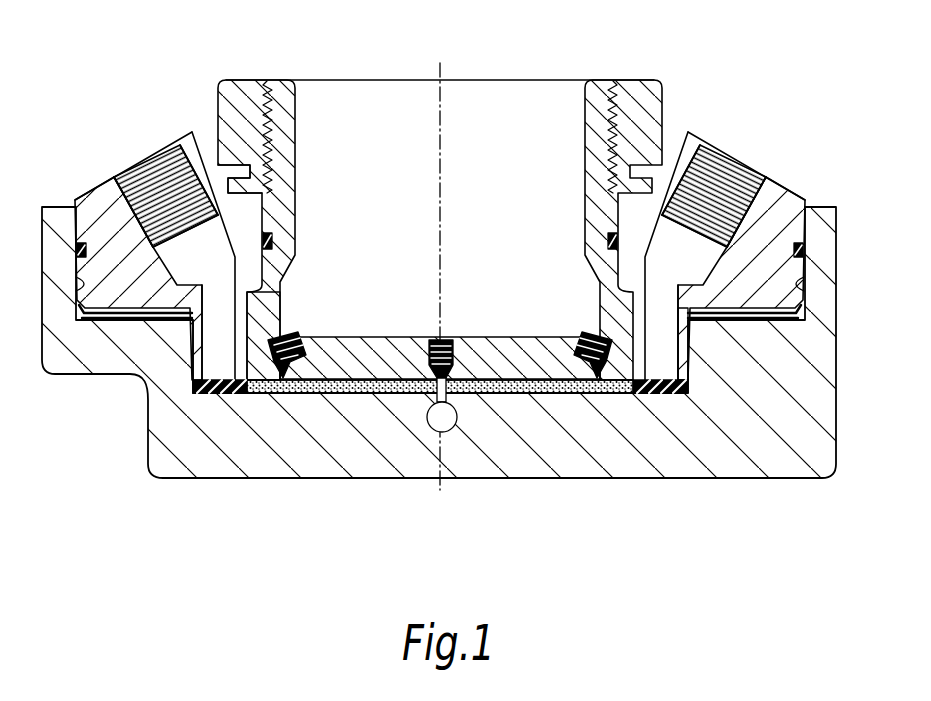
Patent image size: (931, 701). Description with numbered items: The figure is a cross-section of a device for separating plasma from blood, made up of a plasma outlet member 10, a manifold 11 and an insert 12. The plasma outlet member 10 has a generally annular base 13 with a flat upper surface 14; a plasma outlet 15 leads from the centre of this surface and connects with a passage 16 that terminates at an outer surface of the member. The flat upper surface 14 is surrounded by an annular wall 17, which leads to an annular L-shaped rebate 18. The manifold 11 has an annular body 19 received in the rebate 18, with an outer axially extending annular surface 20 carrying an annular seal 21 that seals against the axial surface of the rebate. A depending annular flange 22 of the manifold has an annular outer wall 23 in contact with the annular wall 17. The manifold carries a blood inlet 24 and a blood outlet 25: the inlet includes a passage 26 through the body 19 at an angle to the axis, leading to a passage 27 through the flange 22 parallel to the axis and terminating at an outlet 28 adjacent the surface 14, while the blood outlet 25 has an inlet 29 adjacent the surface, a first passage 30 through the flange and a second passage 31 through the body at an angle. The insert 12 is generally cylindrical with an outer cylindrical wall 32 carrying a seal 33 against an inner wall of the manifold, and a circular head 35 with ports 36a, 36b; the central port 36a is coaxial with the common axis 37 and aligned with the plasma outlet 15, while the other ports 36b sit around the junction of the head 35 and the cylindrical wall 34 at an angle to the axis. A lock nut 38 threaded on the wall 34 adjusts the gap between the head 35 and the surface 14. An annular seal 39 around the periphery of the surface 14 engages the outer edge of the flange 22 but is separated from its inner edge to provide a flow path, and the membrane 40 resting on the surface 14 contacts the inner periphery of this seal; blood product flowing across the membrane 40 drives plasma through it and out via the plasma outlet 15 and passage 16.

The plasma outlet member 10 is at (852, 410).
The manifold 11 is at (797, 176).
The insert 12 is at (668, 80).
The base 13 is at (580, 455).
The flat upper surface 14 is at (295, 395).
The plasma outlet 15 is at (485, 395).
The passage 16 is at (455, 422).
The annular wall 17 is at (197, 338).
The L-shaped rebate 18 is at (100, 315).
The annular body 19 is at (105, 215).
The outer axially extending annular surface 20 is at (78, 290).
The annular seal 21 is at (78, 250).
The depending annular flange 22 is at (262, 385).
The annular outer wall 23 is at (220, 358).
The blood inlet 24 is at (133, 162).
The blood outlet 25 is at (726, 146).
The passage 26 is at (156, 185).
The passage 27 is at (200, 386).
The outlet 28 is at (210, 395).
The inlet 29 is at (667, 395).
The first passage 30 is at (700, 345).
The second passage 31 is at (745, 165).
The outer cylindrical wall 32 is at (186, 128).
The seal 33 is at (615, 243).
The cylindrical wall 34 is at (284, 171).
The circular head 35 is at (387, 343).
The central port 36a is at (448, 342).
The ports 36b is at (290, 335).
The common axis 37 is at (452, 90).
The lock nut 38 is at (637, 95).
The annular seal 39 is at (650, 395).
The membrane 40 is at (385, 395).